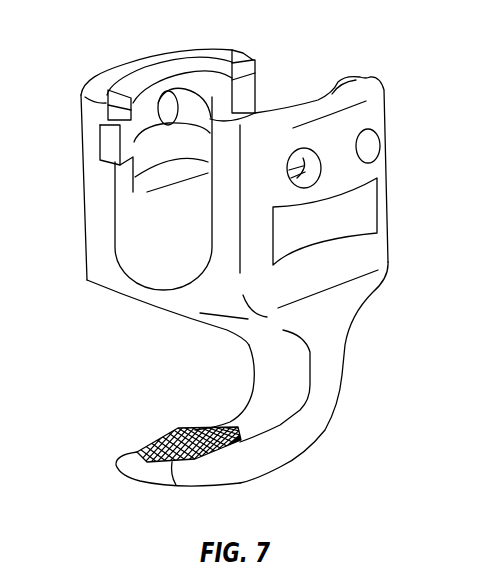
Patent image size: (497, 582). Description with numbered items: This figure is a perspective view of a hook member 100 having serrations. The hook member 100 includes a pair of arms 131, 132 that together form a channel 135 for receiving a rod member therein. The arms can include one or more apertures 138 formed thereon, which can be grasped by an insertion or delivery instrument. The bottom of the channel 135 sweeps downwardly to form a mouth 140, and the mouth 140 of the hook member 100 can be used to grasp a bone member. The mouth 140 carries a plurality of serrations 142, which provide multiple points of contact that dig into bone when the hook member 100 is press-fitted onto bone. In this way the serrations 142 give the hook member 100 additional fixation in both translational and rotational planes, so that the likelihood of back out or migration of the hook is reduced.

The hook member 100 is at (218, 46).
The arm 131 is at (93, 86).
The arm 132 is at (372, 73).
The channel 135 is at (267, 82).
The aperture 138 is at (370, 147).
The mouth 140 is at (338, 400).
The serrations 142 is at (157, 445).